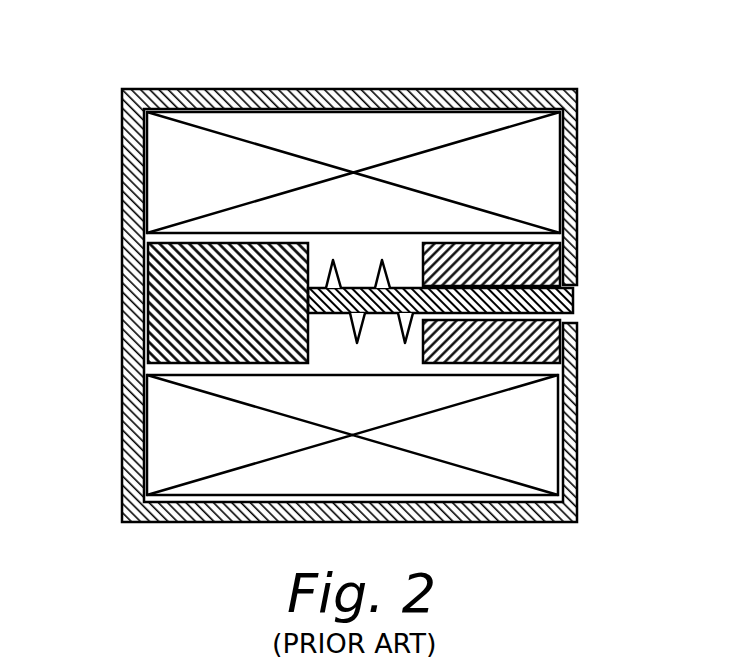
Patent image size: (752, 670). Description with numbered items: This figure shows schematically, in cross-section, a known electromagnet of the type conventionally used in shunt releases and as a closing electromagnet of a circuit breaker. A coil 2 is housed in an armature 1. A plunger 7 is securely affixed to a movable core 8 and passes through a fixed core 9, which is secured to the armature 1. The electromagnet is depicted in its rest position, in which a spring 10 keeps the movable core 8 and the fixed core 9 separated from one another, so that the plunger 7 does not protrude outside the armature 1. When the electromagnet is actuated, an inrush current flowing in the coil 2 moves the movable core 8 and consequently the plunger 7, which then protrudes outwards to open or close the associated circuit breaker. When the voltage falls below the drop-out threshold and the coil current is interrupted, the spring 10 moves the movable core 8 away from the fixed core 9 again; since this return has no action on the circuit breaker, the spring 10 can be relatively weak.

The armature 1 is at (547, 90).
The coil 2 is at (545, 477).
The plunger 7 is at (573, 300).
The movable core 8 is at (178, 344).
The fixed core 9 is at (548, 341).
The spring 10 is at (400, 336).